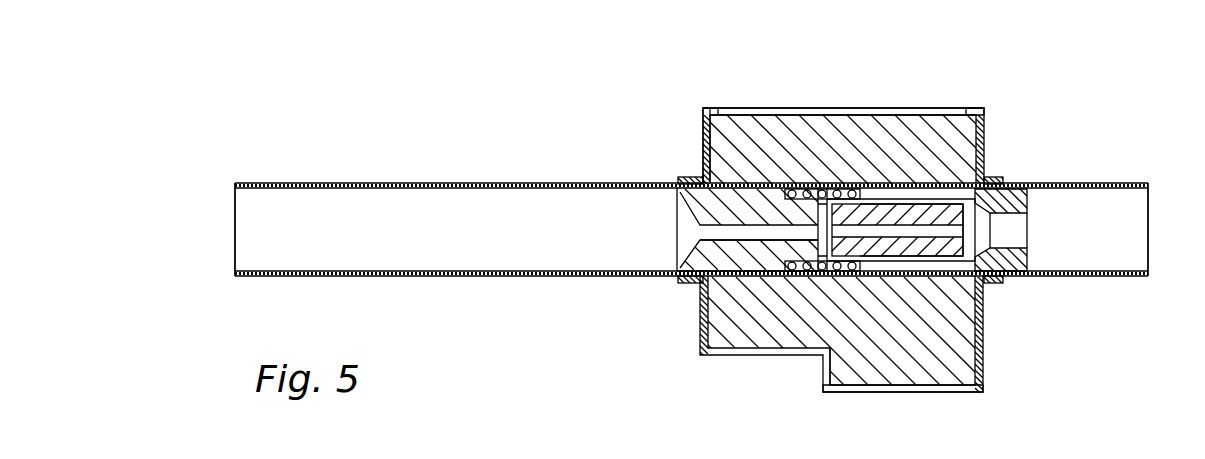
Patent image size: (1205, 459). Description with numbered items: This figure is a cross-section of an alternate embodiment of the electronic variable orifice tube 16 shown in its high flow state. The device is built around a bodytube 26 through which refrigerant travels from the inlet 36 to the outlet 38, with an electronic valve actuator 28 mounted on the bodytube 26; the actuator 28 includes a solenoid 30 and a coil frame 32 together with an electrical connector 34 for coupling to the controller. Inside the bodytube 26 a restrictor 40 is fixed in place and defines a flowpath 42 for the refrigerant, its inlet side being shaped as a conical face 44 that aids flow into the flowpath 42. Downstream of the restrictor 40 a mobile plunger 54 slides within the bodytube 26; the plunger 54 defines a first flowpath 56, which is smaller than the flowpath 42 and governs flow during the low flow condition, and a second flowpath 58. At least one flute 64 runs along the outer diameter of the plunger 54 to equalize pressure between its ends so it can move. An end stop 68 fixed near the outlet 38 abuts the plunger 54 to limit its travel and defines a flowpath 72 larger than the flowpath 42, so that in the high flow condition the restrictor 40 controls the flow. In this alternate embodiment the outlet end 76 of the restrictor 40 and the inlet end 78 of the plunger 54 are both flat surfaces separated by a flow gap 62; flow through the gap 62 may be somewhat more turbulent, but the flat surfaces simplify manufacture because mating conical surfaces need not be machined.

The electronic variable orifice tube 16 is at (1068, 80).
The bodytube 26 is at (302, 183).
The electronic valve actuator 28 is at (863, 112).
The solenoid 30 is at (735, 118).
The coil frame 32 is at (703, 128).
The electrical connector 34 is at (953, 393).
The inlet 36 is at (215, 242).
The outlet 38 is at (1168, 210).
The restrictor 40 is at (712, 262).
The flowpath 42 is at (700, 186).
The conical face 44 is at (722, 233).
The mobile plunger 54 is at (932, 255).
The first flowpath 56 is at (940, 205).
The second flowpath 58 is at (984, 116).
The flow gap 62 is at (822, 283).
The flute 64 is at (900, 195).
The end stop 68 is at (1010, 263).
The flowpath 72 is at (1013, 230).
The outlet end 76 is at (822, 265).
The inlet end 78 is at (855, 190).